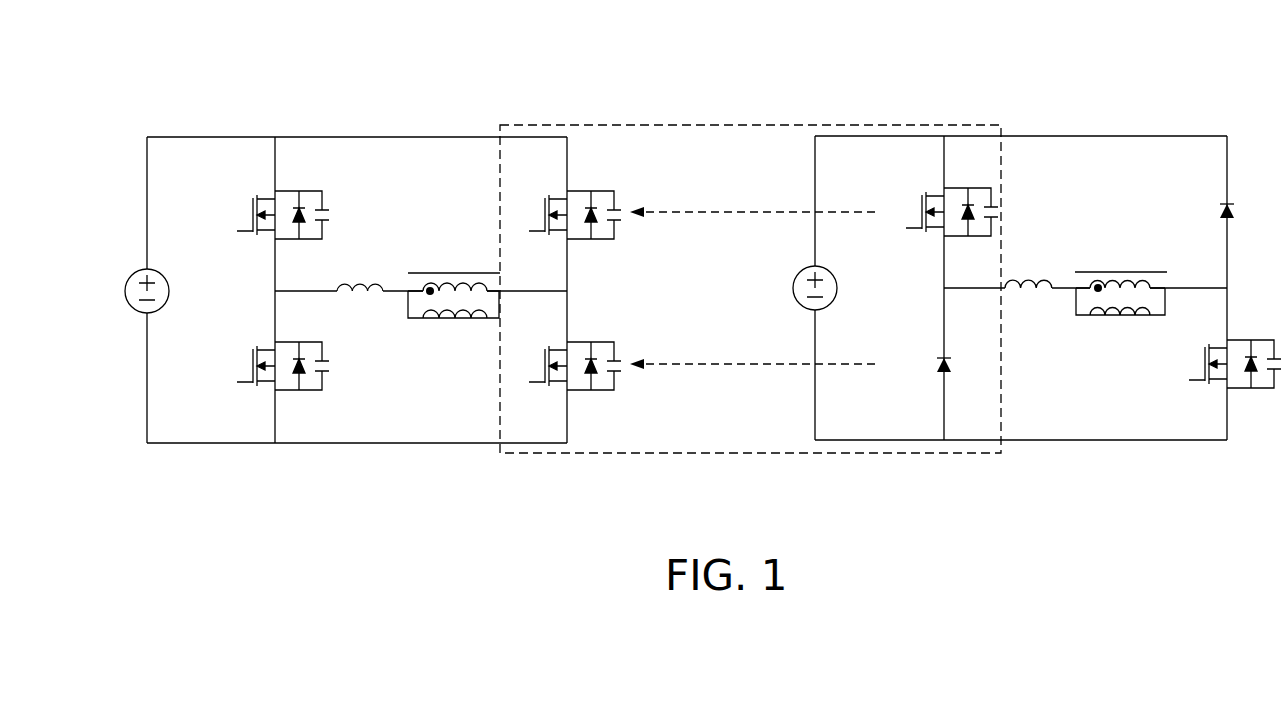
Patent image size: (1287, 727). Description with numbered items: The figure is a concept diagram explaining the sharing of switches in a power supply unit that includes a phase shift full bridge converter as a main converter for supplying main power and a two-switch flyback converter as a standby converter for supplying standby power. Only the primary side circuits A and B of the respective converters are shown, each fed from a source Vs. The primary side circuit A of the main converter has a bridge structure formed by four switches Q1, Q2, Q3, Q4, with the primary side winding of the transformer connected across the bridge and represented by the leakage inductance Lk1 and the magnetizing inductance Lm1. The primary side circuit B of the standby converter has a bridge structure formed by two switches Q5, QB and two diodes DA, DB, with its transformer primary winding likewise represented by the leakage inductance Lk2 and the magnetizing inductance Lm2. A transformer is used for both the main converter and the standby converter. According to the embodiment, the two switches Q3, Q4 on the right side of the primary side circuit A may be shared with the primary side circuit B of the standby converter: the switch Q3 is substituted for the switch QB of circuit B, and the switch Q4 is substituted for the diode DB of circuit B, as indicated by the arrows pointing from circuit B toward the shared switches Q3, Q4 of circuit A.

The primary side circuit of the main converter A is at (153, 95).
The primary side circuit of the standby converter B is at (1222, 95).
The input voltage source Vs is at (467, 289).
The switch Q1 is at (270, 215).
The switch Q2 is at (270, 366).
The switch Q3 is at (562, 215).
The switch Q4 is at (562, 366).
The switch QB is at (939, 212).
The switch Q5 is at (1222, 364).
The diode DA is at (1209, 216).
The diode DB is at (925, 371).
The leakage inductance Lk1 is at (360, 307).
The magnetizing inductance Lm1 is at (454, 315).
The leakage inductance Lk2 is at (1028, 305).
The magnetizing inductance Lm2 is at (1121, 315).